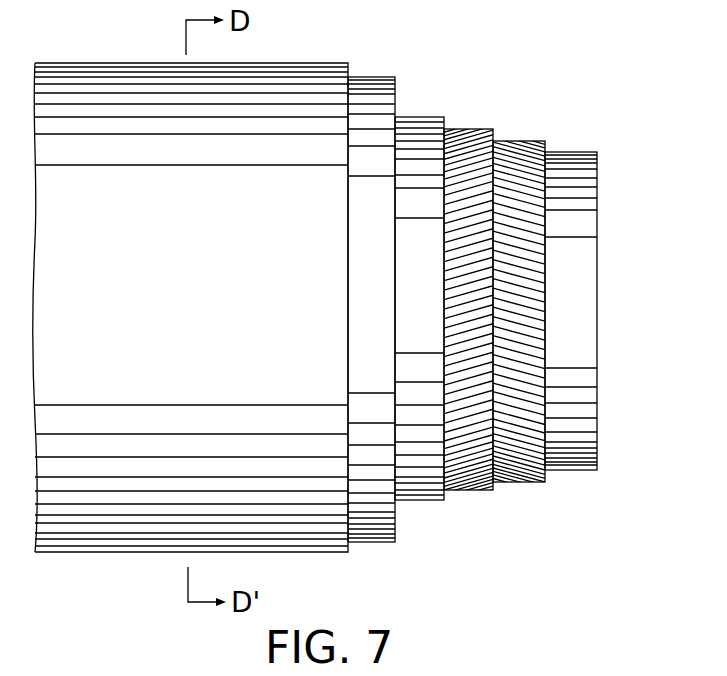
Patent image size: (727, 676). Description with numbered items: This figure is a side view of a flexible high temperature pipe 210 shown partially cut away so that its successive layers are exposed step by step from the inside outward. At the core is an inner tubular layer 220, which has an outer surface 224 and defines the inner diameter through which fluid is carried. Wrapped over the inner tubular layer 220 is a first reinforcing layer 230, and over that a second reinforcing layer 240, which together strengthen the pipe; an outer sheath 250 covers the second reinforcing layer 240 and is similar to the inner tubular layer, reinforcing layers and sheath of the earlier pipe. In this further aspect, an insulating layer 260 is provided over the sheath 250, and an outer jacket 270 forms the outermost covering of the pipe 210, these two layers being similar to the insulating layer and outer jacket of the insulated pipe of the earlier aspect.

The pipe 210 is at (608, 70).
The inner tubular layer 220 is at (583, 471).
The sub-layer of first layer 224 is at (578, 223).
The first reinforcing layer 230 is at (527, 483).
The second reinforcing layer 240 is at (473, 491).
The outer sheath 250 is at (422, 501).
The insulating layer 260 is at (373, 543).
The outer jacket 270 is at (285, 553).